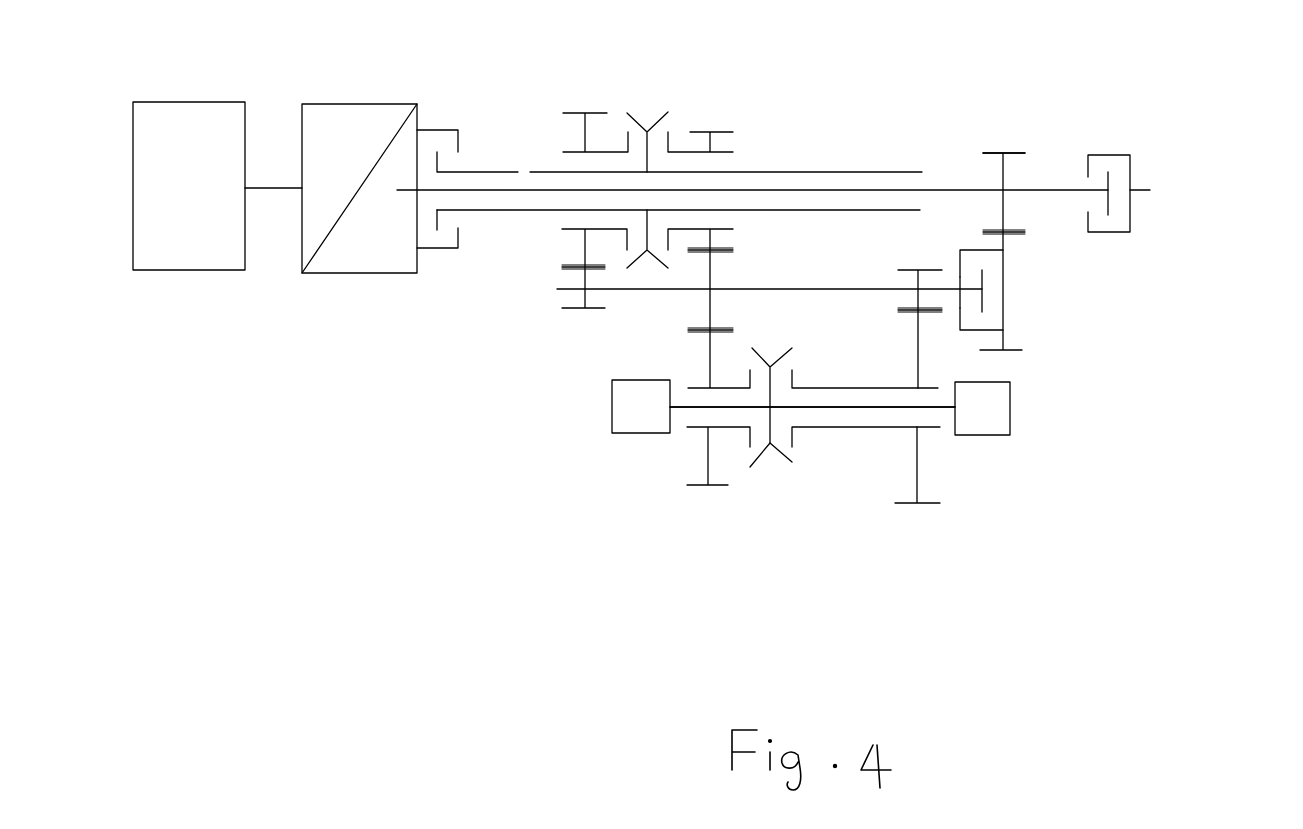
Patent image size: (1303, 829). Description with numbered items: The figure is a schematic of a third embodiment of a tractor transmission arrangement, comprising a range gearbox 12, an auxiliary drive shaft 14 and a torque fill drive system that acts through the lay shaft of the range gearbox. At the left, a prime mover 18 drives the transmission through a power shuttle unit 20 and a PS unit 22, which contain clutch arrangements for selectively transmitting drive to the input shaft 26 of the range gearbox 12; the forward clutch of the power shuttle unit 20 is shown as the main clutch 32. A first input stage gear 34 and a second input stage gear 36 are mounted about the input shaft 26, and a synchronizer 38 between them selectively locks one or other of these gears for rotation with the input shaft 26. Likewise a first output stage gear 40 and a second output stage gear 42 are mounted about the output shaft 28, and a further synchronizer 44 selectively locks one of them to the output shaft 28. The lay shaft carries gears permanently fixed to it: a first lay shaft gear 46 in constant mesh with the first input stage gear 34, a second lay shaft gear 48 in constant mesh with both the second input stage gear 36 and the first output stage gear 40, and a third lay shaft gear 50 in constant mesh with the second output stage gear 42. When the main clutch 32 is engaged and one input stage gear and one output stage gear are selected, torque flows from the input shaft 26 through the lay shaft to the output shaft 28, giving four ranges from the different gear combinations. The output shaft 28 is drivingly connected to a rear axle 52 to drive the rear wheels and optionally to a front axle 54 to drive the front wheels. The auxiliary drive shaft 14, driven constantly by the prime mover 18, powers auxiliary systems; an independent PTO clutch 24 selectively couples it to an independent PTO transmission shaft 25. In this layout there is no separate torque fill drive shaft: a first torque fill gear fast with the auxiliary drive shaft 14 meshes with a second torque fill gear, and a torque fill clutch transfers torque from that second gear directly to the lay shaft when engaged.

The range gearbox 12 is at (612, 492).
The auxiliary drive shaft 14 is at (1043, 190).
The prime mover 18 is at (200, 206).
The power shuttle unit 20 is at (350, 168).
The PS unit 22 is at (380, 251).
The independent PTO clutch 24 is at (1130, 173).
The independent PTO transmission shaft 25 is at (1145, 192).
The input shaft 26 is at (880, 172).
The output shaft 28 is at (835, 400).
The main clutch 32 is at (458, 137).
The first input stage gear 34 is at (593, 112).
The second input stage gear 36 is at (712, 132).
The synchronizer 38 is at (657, 117).
The first output stage gear 40 is at (708, 487).
The second output stage gear 42 is at (917, 480).
The further synchronizer 44 is at (792, 465).
The first lay shaft gear 46 is at (585, 308).
The second lay shaft gear 48 is at (713, 275).
The third lay shaft gear 50 is at (915, 270).
The rear axle 52 is at (1010, 410).
The front axle 54 is at (612, 415).